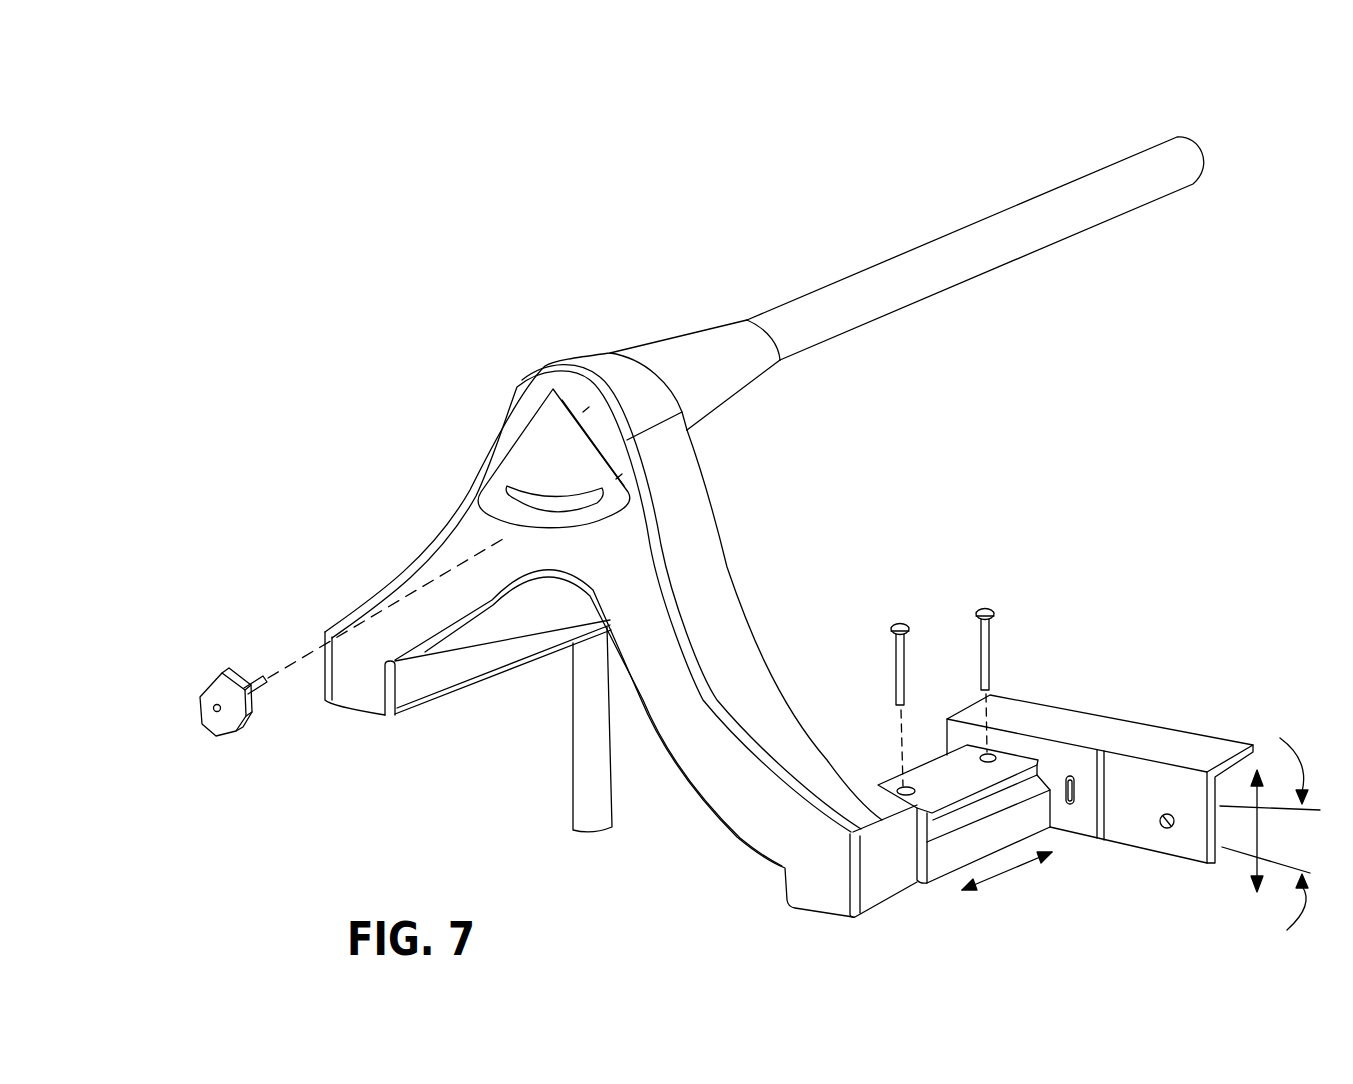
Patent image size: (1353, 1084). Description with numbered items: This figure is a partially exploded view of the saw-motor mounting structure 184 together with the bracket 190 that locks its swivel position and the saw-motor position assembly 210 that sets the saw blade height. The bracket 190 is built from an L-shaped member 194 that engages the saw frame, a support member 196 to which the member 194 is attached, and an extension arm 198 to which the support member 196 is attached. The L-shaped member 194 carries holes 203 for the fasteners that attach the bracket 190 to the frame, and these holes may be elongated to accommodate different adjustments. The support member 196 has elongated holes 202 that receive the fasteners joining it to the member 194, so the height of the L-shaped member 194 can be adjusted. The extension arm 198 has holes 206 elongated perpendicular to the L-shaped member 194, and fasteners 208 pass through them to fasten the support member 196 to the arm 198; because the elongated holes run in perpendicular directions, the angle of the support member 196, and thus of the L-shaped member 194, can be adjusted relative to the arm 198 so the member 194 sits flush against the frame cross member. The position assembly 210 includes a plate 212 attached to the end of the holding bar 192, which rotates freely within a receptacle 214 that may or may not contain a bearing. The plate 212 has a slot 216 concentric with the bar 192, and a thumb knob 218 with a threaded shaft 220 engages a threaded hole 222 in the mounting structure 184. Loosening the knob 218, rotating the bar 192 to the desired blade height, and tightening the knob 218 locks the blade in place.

The saw-motor mounting structure 184 is at (452, 407).
The bracket 190 is at (1072, 733).
The holding bar 192 is at (1192, 155).
The L-shaped member 194 is at (1100, 797).
The support member 196 is at (957, 820).
The extension arm 198 is at (897, 785).
The elongated holes 202 is at (1075, 797).
The holes 203 is at (1167, 828).
The holes 206 is at (917, 795).
The fasteners 208 is at (896, 623).
The saw-motor position assembly 210 is at (204, 708).
The plate 212 is at (557, 410).
The receptacle 214 is at (692, 352).
The slot 216 is at (563, 486).
The thumb knob 218 is at (237, 731).
The threaded shaft 220 is at (251, 684).
The threaded hole 222 is at (553, 500).